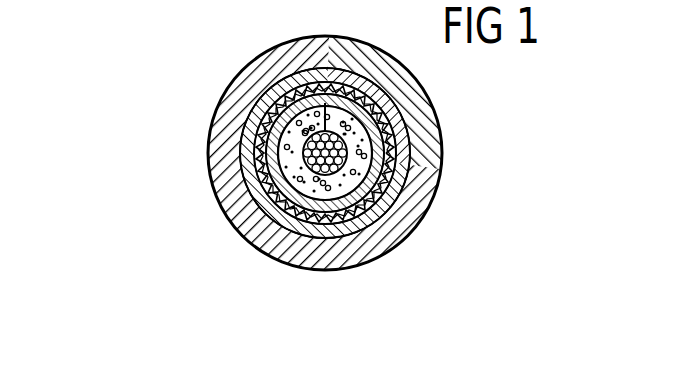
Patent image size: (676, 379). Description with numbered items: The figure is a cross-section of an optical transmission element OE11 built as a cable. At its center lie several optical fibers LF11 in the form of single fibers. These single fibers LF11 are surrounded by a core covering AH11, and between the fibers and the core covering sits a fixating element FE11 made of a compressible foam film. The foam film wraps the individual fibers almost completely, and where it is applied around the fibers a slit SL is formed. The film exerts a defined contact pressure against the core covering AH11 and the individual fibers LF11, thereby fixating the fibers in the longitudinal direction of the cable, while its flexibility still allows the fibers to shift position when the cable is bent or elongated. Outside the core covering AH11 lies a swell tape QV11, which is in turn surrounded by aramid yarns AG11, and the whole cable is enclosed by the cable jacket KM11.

The optical transmission element OE11 is at (198, 108).
The cable jacket KM11 is at (387, 238).
The aramid yarns AG11 is at (387, 194).
The swell tape QV11 is at (387, 167).
The core covering AH11 is at (373, 136).
The fixating element FE11 is at (298, 182).
The optical fibers LF11 is at (314, 156).
The slit SL is at (325, 118).